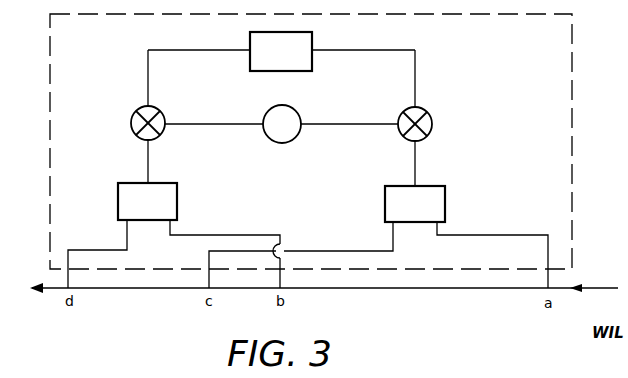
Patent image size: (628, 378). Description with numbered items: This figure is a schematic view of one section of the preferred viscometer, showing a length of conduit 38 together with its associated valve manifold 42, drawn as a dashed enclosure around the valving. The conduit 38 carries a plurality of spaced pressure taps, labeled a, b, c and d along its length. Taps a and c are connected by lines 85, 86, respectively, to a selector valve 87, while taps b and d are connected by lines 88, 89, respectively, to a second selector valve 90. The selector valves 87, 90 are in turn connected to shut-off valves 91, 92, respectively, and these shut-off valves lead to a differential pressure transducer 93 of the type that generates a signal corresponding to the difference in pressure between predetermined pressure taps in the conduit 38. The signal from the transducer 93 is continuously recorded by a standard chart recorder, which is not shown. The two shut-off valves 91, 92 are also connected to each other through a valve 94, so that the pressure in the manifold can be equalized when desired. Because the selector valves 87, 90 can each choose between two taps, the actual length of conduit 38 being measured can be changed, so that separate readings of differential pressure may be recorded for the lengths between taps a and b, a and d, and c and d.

The valve manifold 42 is at (586, 140).
The conduit 38 is at (587, 287).
The differential pressure transducer 93 is at (300, 55).
The shut-off valve 92 is at (130, 118).
The valve 94 is at (288, 130).
The shut-off valve 91 is at (428, 132).
The selector valve 90 is at (177, 213).
The selector valve 87 is at (445, 212).
The line 89 is at (100, 249).
The line 88 is at (216, 234).
The line 86 is at (300, 251).
The line 85 is at (485, 234).